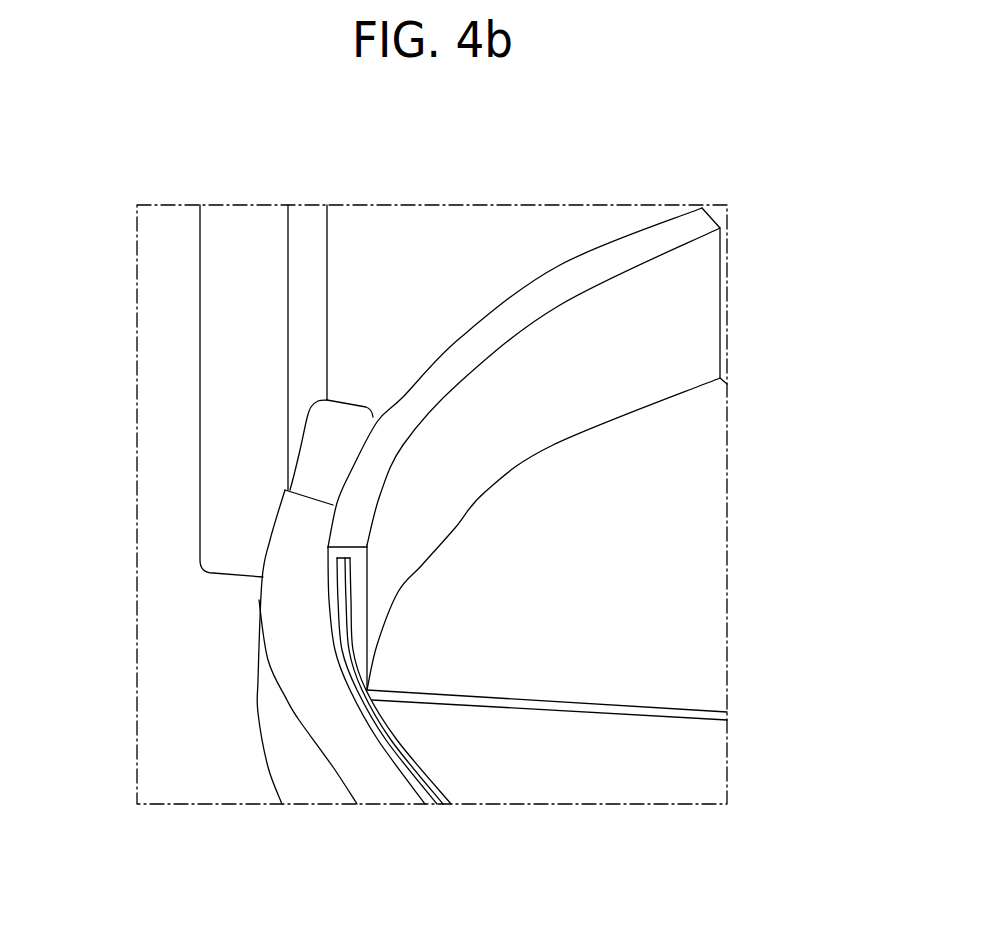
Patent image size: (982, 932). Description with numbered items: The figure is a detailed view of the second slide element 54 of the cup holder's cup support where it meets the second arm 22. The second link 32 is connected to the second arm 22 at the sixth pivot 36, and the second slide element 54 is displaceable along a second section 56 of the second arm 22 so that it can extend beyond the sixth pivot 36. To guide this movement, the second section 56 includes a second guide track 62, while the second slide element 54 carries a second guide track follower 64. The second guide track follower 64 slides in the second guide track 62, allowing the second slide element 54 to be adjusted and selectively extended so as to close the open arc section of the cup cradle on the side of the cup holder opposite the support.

The second arm 22 is at (318, 787).
The second link 32 is at (253, 395).
The sixth pivot 36 is at (368, 380).
The second slide element 54 is at (560, 378).
The second section 56 is at (300, 715).
The second guide track 62 is at (390, 730).
The second guide track follower 64 is at (350, 587).